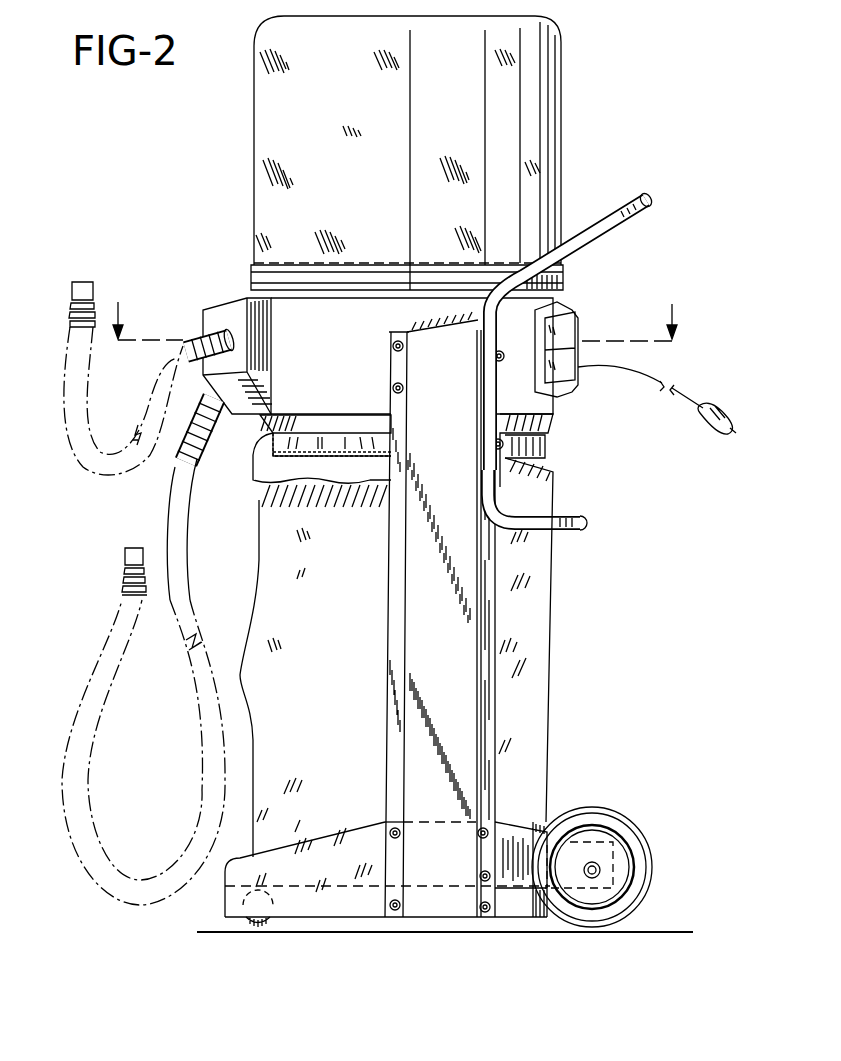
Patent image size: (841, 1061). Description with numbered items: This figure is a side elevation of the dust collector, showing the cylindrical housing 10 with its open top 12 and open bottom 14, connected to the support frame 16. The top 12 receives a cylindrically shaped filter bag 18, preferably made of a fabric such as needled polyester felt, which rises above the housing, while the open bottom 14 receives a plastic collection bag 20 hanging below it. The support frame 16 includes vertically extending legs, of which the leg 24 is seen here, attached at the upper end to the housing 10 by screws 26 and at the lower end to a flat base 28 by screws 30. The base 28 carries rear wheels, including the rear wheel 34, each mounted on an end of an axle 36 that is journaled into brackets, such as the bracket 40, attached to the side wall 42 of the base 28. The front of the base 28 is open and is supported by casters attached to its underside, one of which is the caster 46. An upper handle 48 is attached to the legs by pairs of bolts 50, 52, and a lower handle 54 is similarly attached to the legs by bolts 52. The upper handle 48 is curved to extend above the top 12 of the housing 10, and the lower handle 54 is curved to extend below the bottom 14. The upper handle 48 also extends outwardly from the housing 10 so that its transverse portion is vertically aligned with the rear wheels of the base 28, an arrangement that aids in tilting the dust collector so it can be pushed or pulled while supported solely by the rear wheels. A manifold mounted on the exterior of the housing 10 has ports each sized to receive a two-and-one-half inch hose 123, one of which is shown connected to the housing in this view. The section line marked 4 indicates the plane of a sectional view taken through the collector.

The cylindrical housing 10 is at (563, 294).
The open top 12 is at (384, 262).
The open bottom 14 is at (346, 456).
The support frame 16 is at (497, 582).
The filter bag 18 is at (541, 122).
The collection bag 20 is at (538, 666).
The leg 24 is at (450, 647).
The screws 26 is at (392, 387).
The base 28 is at (340, 893).
The screws 30 is at (425, 827).
The rear wheel 34 is at (620, 812).
The axle 36 is at (601, 870).
The bracket 40 is at (512, 878).
The side wall 42 is at (337, 848).
The caster 46 is at (258, 927).
The upper handle 48 is at (647, 198).
The bolts 50 is at (494, 357).
The bolts 52 is at (493, 444).
The lower handle 54 is at (570, 516).
The hose 123 is at (170, 476).
The section line 4- 4 is at (421, 354).